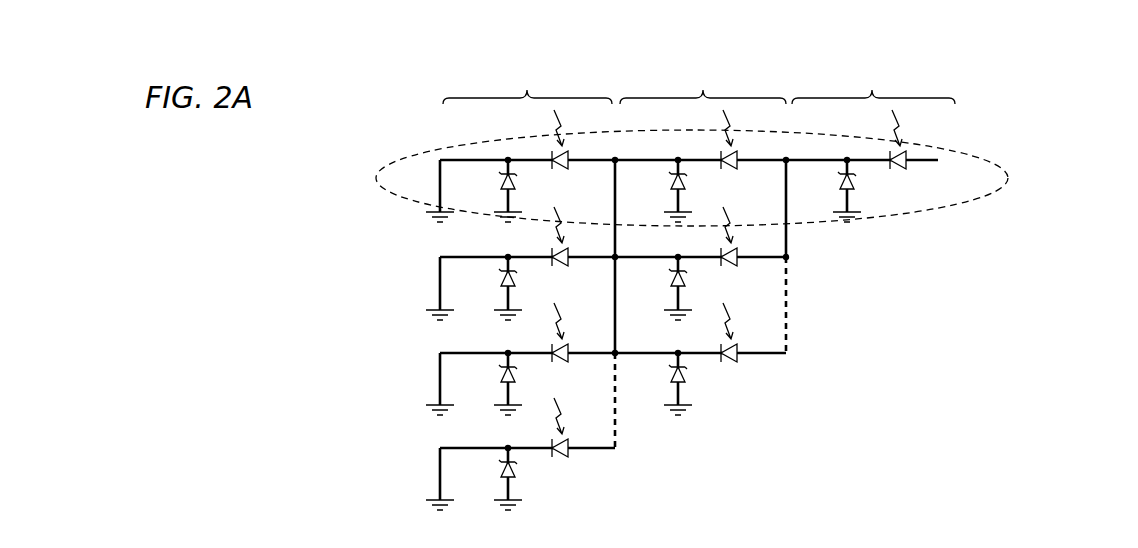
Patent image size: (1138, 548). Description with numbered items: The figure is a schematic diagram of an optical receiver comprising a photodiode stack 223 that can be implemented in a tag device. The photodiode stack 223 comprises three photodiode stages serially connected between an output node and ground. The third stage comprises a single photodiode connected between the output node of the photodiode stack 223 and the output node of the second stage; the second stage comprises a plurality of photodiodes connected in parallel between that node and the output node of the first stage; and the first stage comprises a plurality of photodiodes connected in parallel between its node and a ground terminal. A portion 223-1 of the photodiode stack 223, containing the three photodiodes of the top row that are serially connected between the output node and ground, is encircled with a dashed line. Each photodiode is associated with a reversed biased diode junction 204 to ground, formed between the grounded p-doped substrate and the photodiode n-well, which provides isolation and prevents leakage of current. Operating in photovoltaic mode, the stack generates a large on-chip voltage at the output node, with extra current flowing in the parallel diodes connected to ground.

The photodiode stack 223 is at (266, 156).
The portion of the photodiode stack 223-1 is at (1010, 178).
The reversed biased diode junction 204 is at (503, 187).